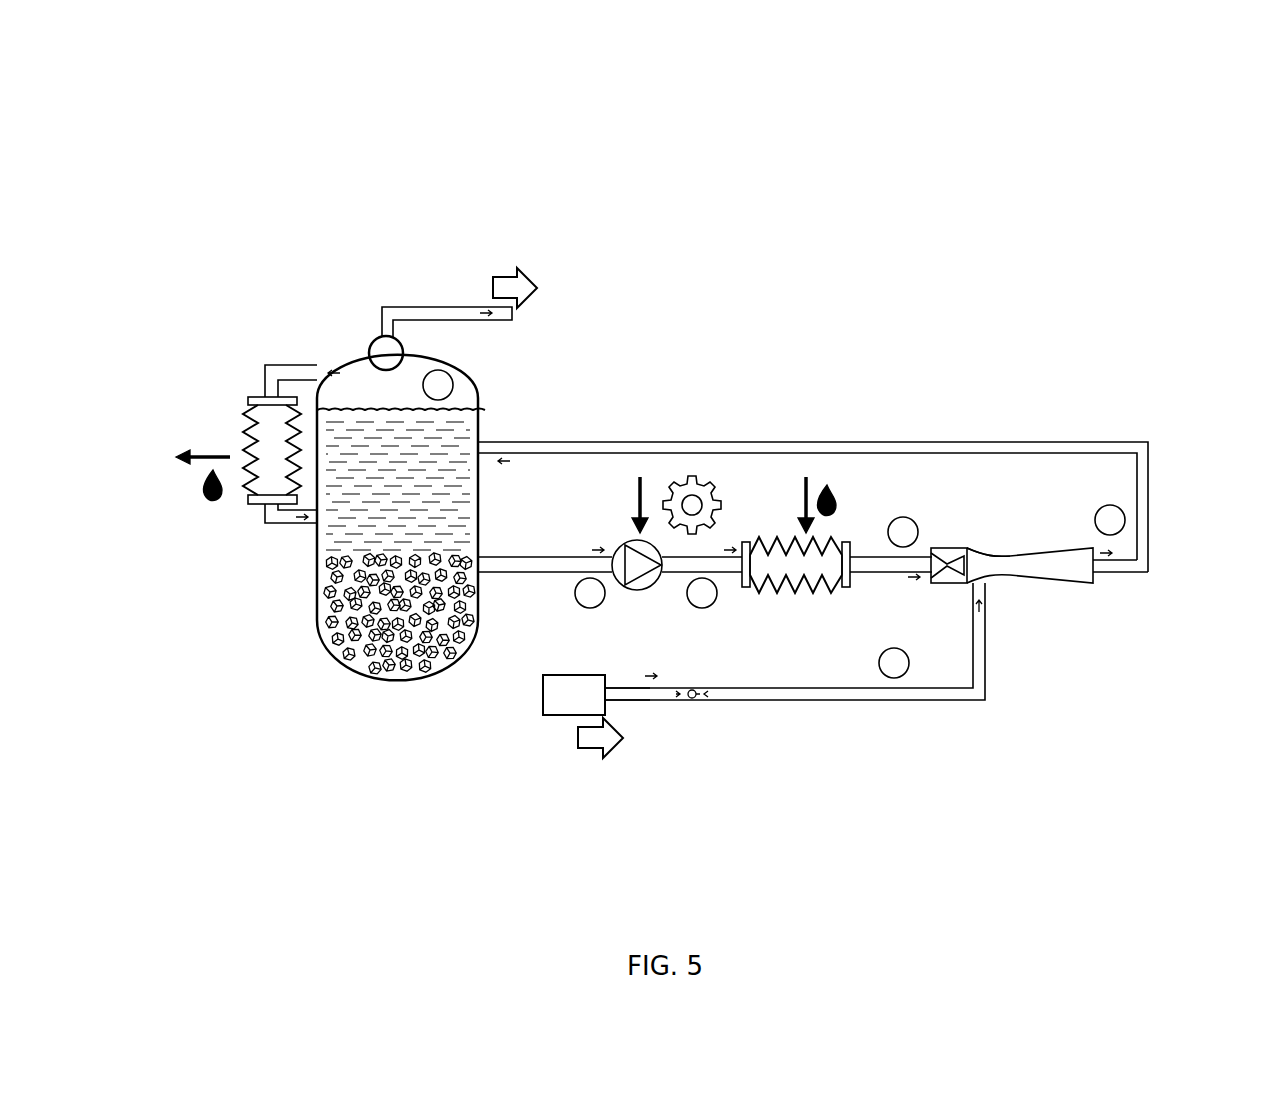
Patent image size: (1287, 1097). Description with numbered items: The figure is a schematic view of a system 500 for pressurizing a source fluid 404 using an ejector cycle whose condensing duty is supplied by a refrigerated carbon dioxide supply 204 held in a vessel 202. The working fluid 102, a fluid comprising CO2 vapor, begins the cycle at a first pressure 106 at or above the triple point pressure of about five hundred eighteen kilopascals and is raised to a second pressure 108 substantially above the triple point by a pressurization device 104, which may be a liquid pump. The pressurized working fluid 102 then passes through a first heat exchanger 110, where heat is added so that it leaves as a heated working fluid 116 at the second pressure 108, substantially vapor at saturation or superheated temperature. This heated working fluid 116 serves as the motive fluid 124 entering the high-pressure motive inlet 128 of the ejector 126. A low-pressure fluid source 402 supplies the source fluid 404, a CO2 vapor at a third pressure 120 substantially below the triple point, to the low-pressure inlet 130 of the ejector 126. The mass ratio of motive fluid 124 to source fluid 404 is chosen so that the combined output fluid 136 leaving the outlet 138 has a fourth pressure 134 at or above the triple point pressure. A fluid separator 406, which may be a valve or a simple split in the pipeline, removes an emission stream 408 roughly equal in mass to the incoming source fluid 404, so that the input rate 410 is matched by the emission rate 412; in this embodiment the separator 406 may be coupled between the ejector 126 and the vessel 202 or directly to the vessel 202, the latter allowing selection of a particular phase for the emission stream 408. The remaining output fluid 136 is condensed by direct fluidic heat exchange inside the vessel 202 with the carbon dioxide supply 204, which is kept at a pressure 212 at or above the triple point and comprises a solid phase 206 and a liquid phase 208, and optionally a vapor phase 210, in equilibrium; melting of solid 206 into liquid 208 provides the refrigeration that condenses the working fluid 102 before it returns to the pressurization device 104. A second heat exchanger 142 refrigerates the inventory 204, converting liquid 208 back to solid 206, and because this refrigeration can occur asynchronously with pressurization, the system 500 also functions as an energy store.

The system 500 is at (1176, 163).
The working fluid 102 is at (500, 572).
The pressurization device 104 is at (625, 550).
The first pressure 106 is at (583, 608).
The second pressure 108 is at (703, 608).
The first heat exchanger 110 is at (827, 537).
The heated working fluid 116 is at (918, 565).
The third pressure 120 is at (893, 677).
The motive fluid 124 is at (865, 567).
The high-pressure motive inlet 128 is at (932, 580).
The ejector 126 is at (1020, 592).
The low-pressure inlet 130 is at (988, 584).
The fourth pressure 134 is at (1110, 504).
The output fluid 136 is at (1146, 530).
The outlet 138 is at (1098, 578).
The second heat exchanger 142 is at (247, 412).
The vessel 202 is at (329, 652).
The carbon dioxide supply 204 is at (272, 624).
The solid phase 206 is at (388, 673).
The liquid phase 208 is at (345, 515).
The vapor phase 210 is at (353, 388).
The pressure 212 is at (453, 388).
The low-pressure fluid source 402 is at (563, 705).
The source fluid 404 is at (650, 690).
The fluid separator 406 is at (384, 336).
The emission stream 408 is at (453, 315).
The input rate 410 is at (593, 748).
The emission rate 412 is at (505, 283).